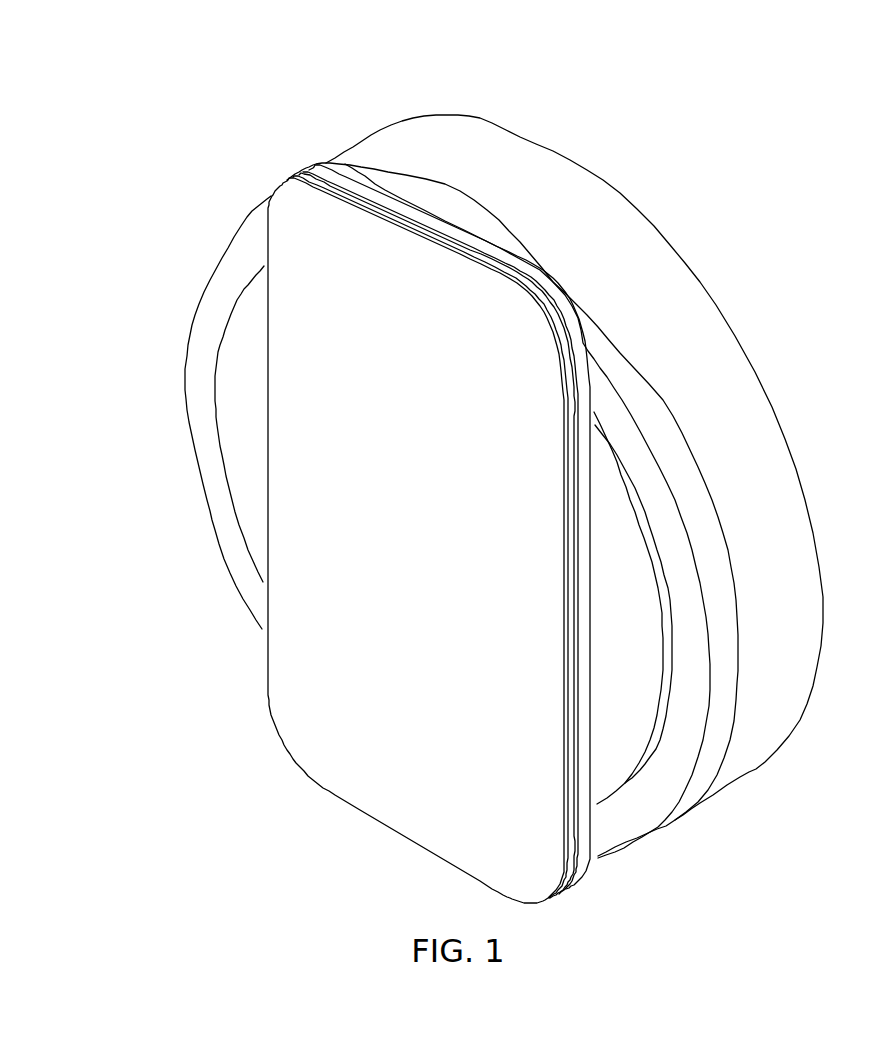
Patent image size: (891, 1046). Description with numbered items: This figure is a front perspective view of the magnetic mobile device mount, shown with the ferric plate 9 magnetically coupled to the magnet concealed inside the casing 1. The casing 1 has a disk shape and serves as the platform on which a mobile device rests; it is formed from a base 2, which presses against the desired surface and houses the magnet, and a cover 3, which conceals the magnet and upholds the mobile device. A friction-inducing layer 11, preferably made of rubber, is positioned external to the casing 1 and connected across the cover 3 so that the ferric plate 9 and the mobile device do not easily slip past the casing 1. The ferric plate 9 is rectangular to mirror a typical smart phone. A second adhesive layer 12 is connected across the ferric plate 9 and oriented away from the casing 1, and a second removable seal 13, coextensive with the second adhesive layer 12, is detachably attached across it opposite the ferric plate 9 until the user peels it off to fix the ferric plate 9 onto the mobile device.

The casing 1 is at (305, 137).
The base 2 is at (767, 418).
The cover 3 is at (207, 362).
The ferric plate 9 is at (585, 547).
The friction-inducing layer 11 is at (603, 787).
The second adhesive layer 12 is at (570, 718).
The second removable seal 13 is at (567, 642).